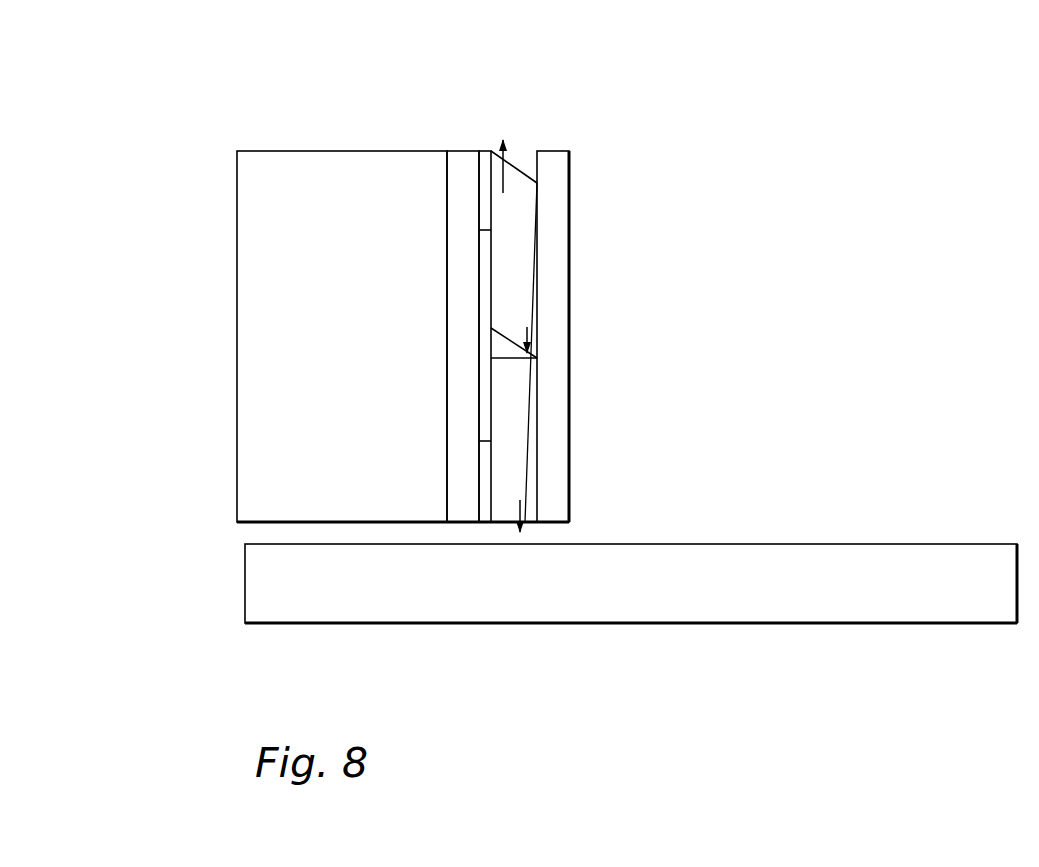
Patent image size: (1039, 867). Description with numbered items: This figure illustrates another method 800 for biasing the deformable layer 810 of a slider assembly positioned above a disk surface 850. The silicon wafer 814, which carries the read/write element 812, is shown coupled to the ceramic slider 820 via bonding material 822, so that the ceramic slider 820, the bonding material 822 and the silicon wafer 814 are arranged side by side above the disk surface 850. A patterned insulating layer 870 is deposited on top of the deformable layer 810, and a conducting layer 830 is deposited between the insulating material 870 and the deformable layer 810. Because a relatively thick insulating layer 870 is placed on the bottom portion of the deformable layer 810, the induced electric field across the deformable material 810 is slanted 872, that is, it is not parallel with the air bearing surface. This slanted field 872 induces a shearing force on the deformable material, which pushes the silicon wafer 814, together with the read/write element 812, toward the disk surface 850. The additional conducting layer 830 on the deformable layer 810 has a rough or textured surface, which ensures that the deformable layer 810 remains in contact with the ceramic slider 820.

The method for biasing the deformable layer 800 is at (729, 70).
The deformable layer 810 is at (513, 218).
The read/write element 812 is at (508, 482).
The silicon wafer 814 is at (568, 268).
The ceramic slider 820 is at (258, 325).
The bonding material 822 is at (462, 163).
The conducting layer 830 is at (487, 160).
The disk surface 850 is at (250, 605).
The patterned insulating layer 870 is at (482, 317).
The slanted electric field 872 is at (502, 173).